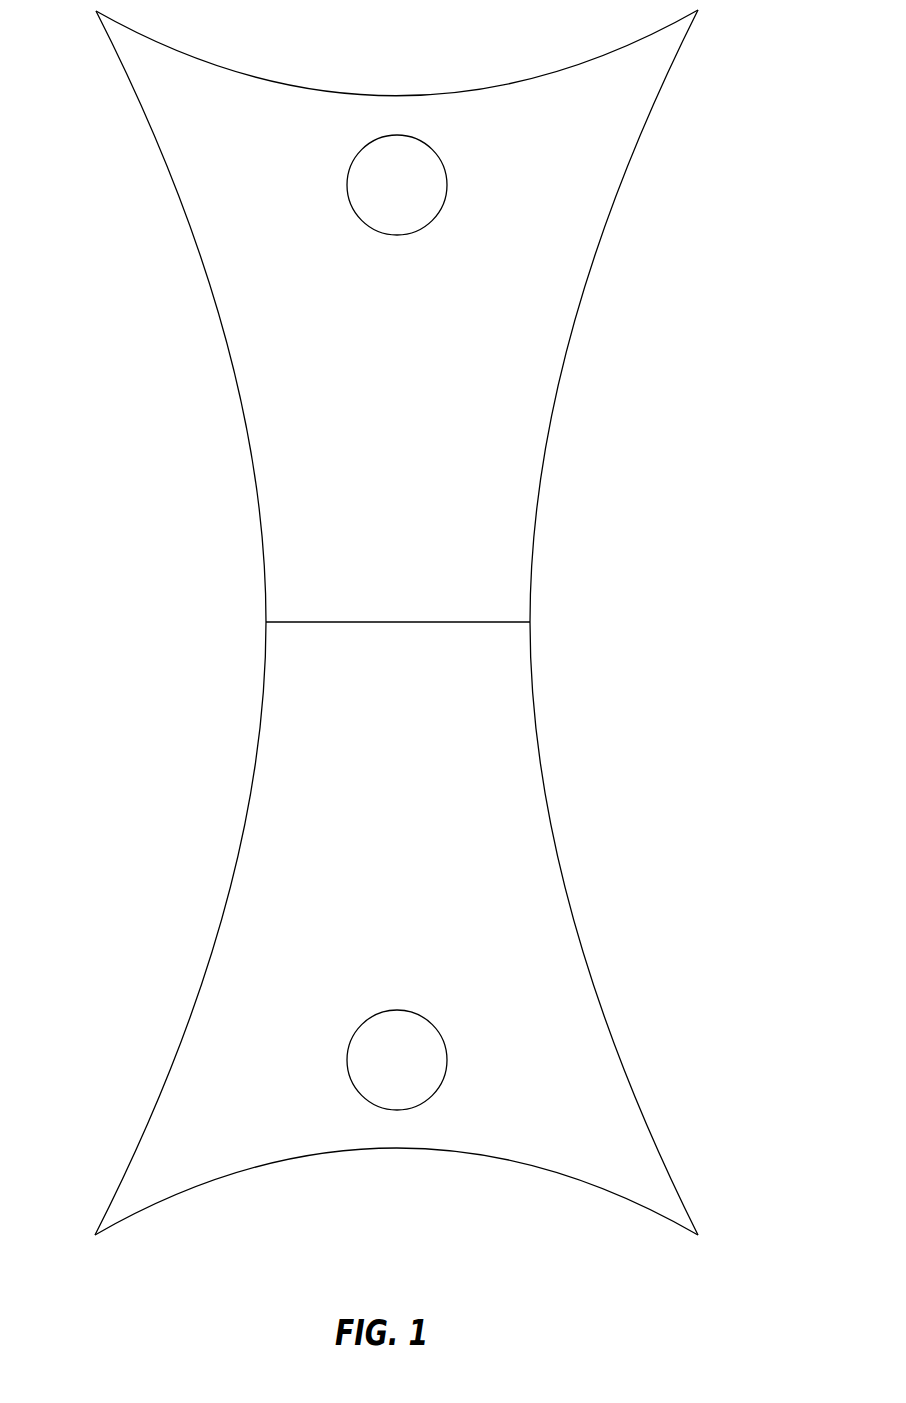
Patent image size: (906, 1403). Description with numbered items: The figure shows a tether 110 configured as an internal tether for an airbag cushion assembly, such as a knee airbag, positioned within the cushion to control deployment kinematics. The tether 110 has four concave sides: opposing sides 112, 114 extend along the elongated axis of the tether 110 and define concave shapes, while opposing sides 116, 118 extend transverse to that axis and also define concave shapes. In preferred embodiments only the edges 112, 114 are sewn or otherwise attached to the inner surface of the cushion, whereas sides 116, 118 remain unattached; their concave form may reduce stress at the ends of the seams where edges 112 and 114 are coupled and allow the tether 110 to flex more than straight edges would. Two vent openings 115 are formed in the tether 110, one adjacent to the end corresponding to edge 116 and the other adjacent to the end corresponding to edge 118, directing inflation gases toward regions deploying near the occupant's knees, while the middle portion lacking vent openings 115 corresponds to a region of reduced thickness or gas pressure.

The tether 110 is at (411, 625).
The side/edge 112 is at (263, 587).
The side/edge 114 is at (532, 587).
The vent opening 115 is at (428, 185).
The side/edge 116 is at (401, 96).
The side/edge 118 is at (402, 1148).